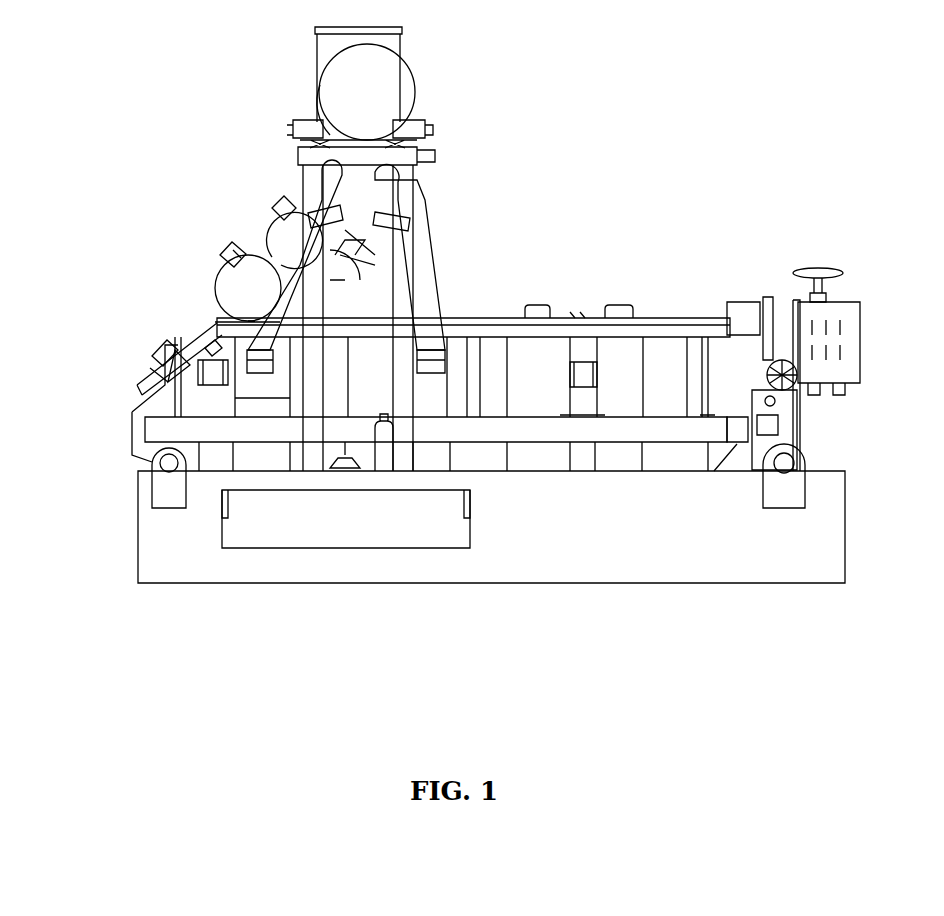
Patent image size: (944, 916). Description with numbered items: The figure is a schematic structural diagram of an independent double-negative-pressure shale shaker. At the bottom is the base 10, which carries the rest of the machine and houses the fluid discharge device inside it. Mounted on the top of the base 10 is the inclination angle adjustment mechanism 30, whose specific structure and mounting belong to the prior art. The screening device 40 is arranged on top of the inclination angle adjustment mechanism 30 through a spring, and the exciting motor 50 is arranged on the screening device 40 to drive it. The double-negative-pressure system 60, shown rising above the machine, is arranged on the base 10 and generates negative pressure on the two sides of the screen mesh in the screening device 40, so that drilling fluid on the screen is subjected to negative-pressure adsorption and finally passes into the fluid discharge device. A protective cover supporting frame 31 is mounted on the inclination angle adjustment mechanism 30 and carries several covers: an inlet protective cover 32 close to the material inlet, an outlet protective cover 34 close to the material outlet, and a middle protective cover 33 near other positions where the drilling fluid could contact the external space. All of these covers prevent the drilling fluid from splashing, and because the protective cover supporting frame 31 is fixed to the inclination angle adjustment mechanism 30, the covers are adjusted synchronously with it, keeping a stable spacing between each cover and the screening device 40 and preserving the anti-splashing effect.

The base 10 is at (466, 592).
The inclination angle adjustment mechanism 30 is at (700, 480).
The protective cover supporting frame 31 is at (548, 455).
The inlet protective cover 32 is at (626, 295).
The middle protective cover 33 is at (541, 295).
The outlet protective cover 34 is at (146, 330).
The screening device 40 is at (663, 325).
The exciting motor 50 is at (212, 242).
The double-negative-pressure system 60 is at (445, 170).